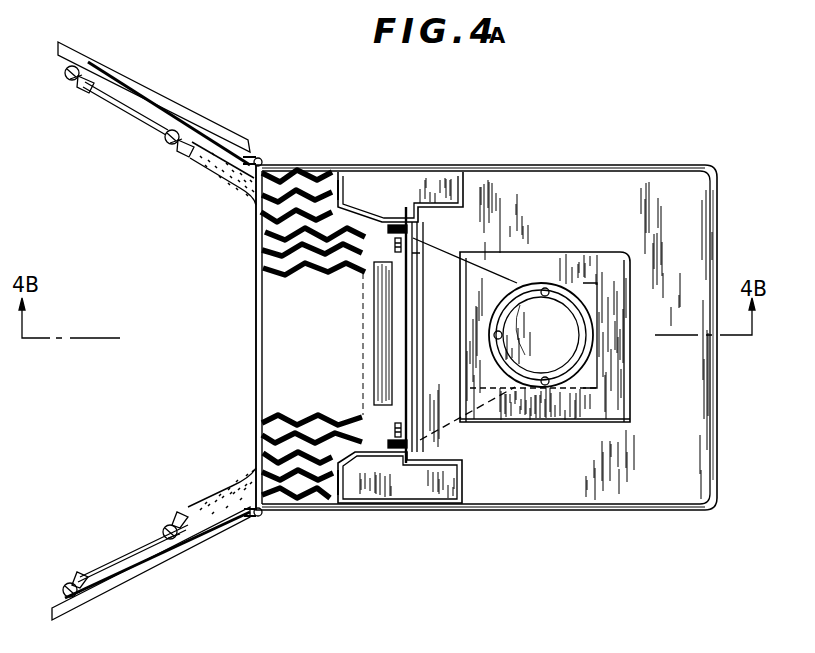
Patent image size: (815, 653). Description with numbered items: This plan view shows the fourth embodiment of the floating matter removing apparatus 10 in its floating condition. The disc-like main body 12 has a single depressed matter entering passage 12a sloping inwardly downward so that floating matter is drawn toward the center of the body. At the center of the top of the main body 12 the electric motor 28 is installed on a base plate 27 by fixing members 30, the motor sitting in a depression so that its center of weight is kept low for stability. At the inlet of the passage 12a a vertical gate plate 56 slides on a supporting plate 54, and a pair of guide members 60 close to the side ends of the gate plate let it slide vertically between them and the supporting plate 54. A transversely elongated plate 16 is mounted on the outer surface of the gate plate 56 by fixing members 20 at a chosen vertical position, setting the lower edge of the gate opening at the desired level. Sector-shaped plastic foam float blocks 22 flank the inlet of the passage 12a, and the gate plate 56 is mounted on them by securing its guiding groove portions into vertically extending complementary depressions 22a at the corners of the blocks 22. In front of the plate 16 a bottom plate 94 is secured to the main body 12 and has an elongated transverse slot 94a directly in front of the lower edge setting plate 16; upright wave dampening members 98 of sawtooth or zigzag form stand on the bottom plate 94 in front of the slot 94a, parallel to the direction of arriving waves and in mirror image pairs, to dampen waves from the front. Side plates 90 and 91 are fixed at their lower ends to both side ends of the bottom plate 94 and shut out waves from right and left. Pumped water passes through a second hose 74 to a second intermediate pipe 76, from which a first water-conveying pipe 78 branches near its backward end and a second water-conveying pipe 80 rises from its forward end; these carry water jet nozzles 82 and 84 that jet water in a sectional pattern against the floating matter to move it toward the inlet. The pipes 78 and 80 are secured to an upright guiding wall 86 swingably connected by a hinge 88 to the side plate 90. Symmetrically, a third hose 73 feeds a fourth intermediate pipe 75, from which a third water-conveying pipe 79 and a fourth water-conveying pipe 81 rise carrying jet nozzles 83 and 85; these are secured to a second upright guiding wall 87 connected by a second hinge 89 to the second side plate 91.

The housing 10 is at (649, 162).
The main body 12 is at (712, 213).
The matter entering passage 12a is at (447, 400).
The transversely elongated plate 16 is at (406, 288).
The fixing members 20 is at (397, 253).
The float blocks 22 is at (410, 172).
The complementary depressions 22a is at (355, 213).
The base plate 27 is at (611, 270).
The electric motor 28 is at (527, 308).
The fixing members 30 is at (545, 287).
The supporting plate 54 is at (423, 301).
The gate plate 56 is at (424, 244).
The guide members 60 is at (405, 210).
The third hose 73 is at (217, 501).
The second hose 74 is at (229, 180).
The fourth intermediate pipe 75 is at (129, 555).
The second intermediate pipe 76 is at (138, 115).
The first water-conveying pipe 78 is at (168, 143).
The third water-conveying pipe 79 is at (163, 527).
The second water-conveying pipe 80 is at (67, 81).
The fourth water-conveying pipe 81 is at (61, 587).
The water jet nozzle 82 is at (187, 140).
The jet nozzle 83 is at (195, 533).
The water jet nozzle 84 is at (98, 70).
The jet nozzle 85 is at (68, 582).
The upright guiding wall 86 is at (160, 105).
The second upright guiding wall 87 is at (134, 582).
The hinge 88 is at (260, 160).
The second hinge 89 is at (259, 520).
The upright side plate 90 is at (306, 166).
The second side plate 91 is at (318, 511).
The bottom plate 94 is at (258, 327).
The elongated transverse slot 94a is at (381, 343).
The wave dampening members 98 is at (273, 215).